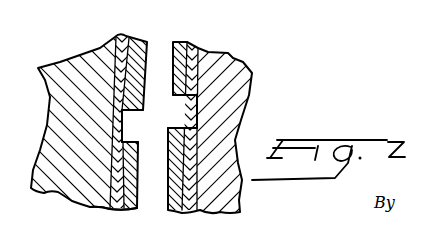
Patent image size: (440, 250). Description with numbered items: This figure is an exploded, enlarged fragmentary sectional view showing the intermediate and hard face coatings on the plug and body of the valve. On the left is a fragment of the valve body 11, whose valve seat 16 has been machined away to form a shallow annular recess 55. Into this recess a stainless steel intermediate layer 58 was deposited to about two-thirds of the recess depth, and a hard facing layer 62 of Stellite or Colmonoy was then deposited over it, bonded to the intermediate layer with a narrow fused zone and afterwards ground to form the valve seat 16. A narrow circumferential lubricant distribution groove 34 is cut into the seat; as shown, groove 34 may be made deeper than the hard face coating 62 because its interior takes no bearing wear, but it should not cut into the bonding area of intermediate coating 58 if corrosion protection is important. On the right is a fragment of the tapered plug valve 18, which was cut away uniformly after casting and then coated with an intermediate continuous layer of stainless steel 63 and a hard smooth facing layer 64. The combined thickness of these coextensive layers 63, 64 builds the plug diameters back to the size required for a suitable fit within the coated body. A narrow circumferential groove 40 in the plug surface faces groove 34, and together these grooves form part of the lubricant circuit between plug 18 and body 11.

The valve body 11 is at (78, 60).
The valve seat 16 is at (147, 42).
The tapered plug valve 18 is at (237, 58).
The circumferential groove 34 is at (123, 124).
The circumferential groove 40 is at (188, 100).
The annular recess 55 is at (124, 36).
The stainless steel intermediate layer 58 is at (112, 209).
The hard facing layer 62 is at (130, 211).
The intermediate continuous layer of stainless steel 63 is at (186, 213).
The hard smooth facing layer 64 is at (182, 213).